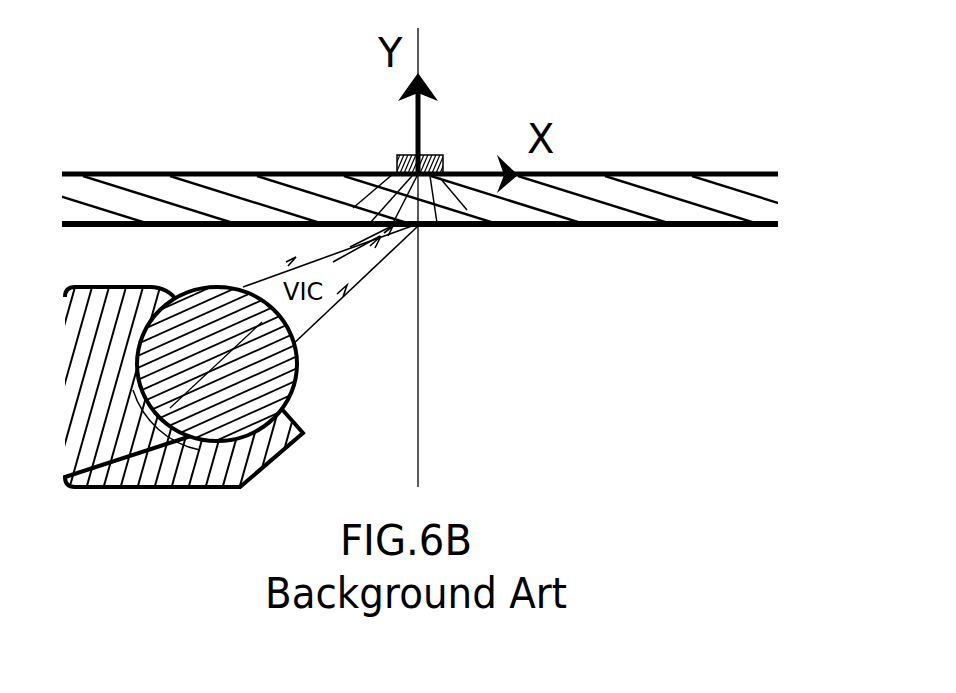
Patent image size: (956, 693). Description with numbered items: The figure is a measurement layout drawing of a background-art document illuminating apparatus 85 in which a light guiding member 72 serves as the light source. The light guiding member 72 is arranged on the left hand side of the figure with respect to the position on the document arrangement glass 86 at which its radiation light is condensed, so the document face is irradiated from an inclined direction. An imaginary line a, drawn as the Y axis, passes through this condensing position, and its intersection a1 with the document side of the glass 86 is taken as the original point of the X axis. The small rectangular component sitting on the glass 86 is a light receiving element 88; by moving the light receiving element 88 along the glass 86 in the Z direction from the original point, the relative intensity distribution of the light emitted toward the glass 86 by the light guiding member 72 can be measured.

The document illuminating apparatus 85 is at (233, 132).
The document arrangement glass 86 is at (610, 172).
The light receiving element 88 is at (437, 153).
The light guiding member 72 is at (293, 382).
The intersection a1 is at (433, 228).
The imaginary line a is at (418, 338).